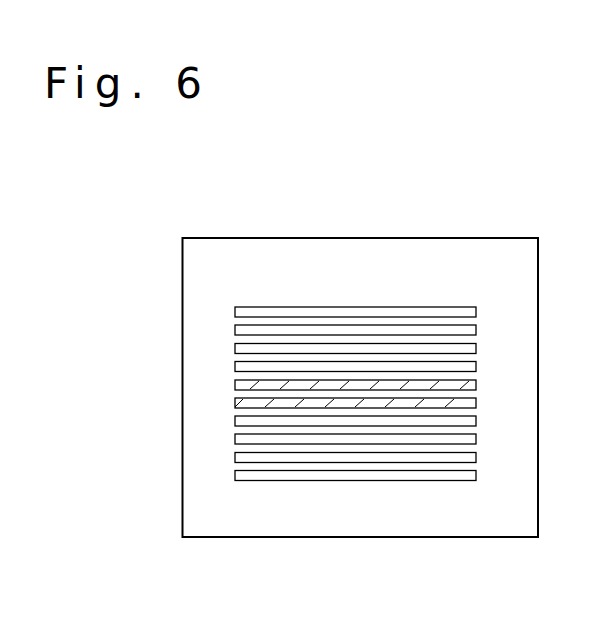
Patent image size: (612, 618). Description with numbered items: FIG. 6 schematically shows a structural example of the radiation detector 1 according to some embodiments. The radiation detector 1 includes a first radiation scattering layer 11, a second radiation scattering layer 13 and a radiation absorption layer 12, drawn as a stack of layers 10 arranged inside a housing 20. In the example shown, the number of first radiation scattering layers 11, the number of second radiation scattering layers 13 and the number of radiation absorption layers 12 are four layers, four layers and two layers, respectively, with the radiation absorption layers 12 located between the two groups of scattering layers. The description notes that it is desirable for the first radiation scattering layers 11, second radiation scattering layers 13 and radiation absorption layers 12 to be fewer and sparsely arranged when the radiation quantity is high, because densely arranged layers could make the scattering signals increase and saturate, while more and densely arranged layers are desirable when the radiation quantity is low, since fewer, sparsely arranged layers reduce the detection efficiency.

The radiation detector 1 is at (345, 220).
The housing 20 is at (478, 238).
The electrode group 10 is at (544, 320).
The first radiation scattering layer 11 is at (494, 312).
The radiation absorption layer 12 is at (494, 375).
The second radiation scattering layer 13 is at (494, 420).